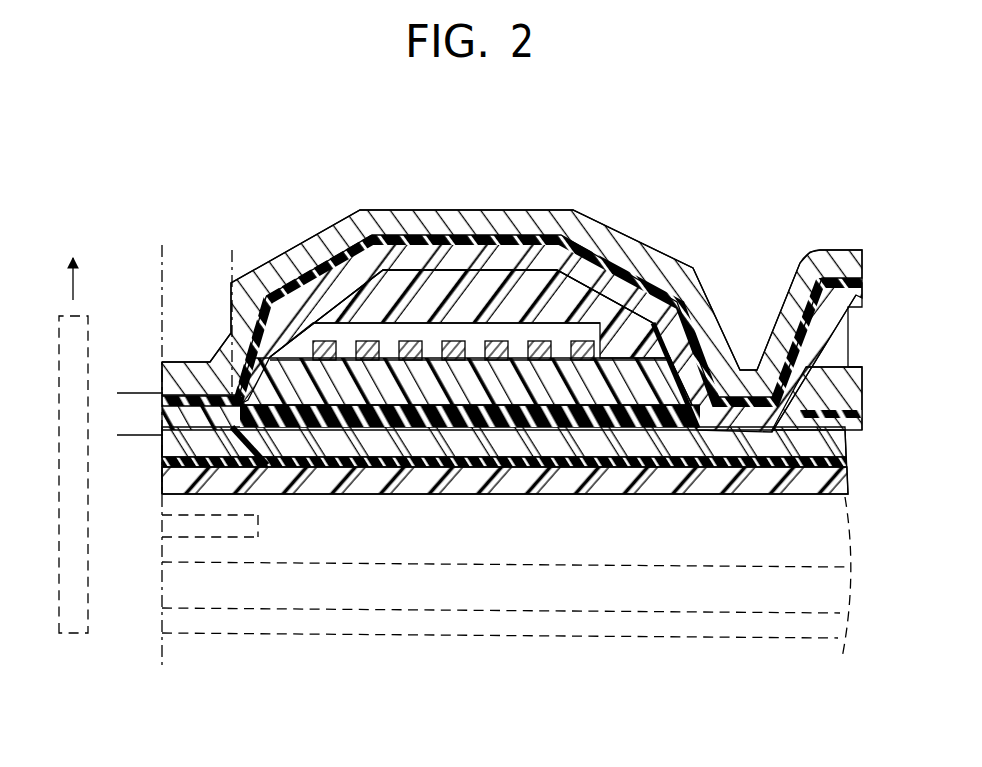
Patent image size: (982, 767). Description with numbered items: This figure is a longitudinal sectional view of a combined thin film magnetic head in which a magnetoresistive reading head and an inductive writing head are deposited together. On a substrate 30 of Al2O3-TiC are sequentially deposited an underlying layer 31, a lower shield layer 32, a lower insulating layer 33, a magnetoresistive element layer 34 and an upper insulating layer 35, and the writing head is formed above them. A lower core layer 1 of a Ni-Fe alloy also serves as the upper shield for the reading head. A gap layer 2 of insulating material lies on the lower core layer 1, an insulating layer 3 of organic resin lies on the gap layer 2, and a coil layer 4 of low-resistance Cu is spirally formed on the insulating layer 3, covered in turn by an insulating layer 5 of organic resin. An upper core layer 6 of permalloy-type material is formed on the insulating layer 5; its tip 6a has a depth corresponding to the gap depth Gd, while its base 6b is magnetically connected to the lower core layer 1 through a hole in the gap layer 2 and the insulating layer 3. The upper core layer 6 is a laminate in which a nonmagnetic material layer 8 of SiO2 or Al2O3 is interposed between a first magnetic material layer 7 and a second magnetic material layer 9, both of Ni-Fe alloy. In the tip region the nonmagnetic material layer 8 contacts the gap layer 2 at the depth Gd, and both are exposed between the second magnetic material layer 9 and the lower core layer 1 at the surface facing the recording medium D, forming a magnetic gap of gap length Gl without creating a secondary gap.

The lower core layer 1 is at (548, 335).
The gap layer 2 is at (193, 420).
The insulating layer 3 is at (698, 362).
The coil layer 4 is at (465, 323).
The insulating layer 5 is at (507, 290).
The upper core layer 6 is at (512, 296).
The tip of the upper core layer 6a is at (184, 357).
The base of the upper core layer 6b is at (745, 365).
The first magnetic material layer 7 is at (572, 270).
The nonmagnetic material layer 8 is at (637, 273).
The second magnetic material layer 9 is at (673, 277).
The substrate 30 is at (195, 655).
The underlying layer 31 is at (200, 620).
The lower shield layer 32 is at (195, 587).
The lower insulating layer 33 is at (205, 552).
The magnetoresistive element layer 34 is at (195, 527).
The upper insulating layer 35 is at (205, 510).
The recording medium D is at (84, 337).
The gap depth Gd is at (231, 258).
The gap length Gl is at (130, 372).